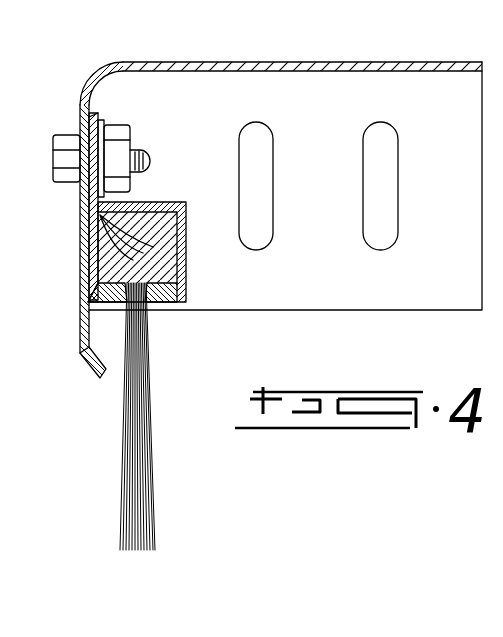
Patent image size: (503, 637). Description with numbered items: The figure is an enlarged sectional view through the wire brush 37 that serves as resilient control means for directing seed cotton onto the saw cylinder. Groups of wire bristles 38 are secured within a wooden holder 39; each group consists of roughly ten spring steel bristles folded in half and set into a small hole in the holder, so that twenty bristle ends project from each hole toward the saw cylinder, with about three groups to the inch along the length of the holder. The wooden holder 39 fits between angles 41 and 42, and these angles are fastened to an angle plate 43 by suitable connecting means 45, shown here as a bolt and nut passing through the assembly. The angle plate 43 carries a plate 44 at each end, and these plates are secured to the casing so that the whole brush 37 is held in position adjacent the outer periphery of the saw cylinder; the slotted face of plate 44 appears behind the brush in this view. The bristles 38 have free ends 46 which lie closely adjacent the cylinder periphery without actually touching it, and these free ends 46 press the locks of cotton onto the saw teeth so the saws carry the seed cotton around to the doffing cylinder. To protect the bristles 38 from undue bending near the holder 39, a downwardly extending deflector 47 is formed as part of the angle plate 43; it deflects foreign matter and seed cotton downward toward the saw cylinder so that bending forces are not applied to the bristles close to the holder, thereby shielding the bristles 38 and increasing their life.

The wire brush 37 is at (72, 325).
The wire bristles 38 is at (146, 440).
The wooden holder 39 is at (172, 236).
The angle 41 is at (183, 271).
The angle 42 is at (93, 235).
The angle plate 43 is at (209, 38).
The plate 44 is at (346, 163).
The connecting means 45 is at (147, 160).
The free ends 46 is at (147, 551).
The deflector 47 is at (78, 353).